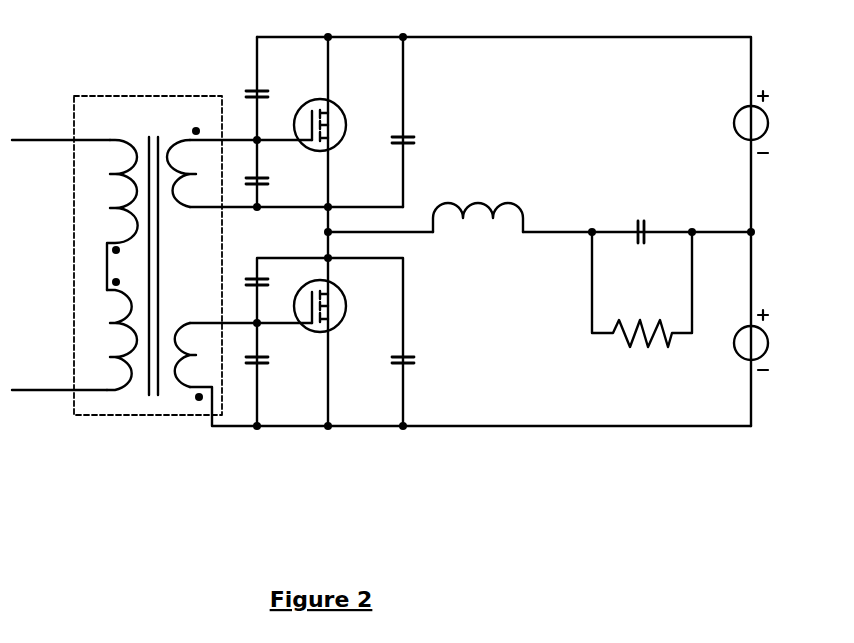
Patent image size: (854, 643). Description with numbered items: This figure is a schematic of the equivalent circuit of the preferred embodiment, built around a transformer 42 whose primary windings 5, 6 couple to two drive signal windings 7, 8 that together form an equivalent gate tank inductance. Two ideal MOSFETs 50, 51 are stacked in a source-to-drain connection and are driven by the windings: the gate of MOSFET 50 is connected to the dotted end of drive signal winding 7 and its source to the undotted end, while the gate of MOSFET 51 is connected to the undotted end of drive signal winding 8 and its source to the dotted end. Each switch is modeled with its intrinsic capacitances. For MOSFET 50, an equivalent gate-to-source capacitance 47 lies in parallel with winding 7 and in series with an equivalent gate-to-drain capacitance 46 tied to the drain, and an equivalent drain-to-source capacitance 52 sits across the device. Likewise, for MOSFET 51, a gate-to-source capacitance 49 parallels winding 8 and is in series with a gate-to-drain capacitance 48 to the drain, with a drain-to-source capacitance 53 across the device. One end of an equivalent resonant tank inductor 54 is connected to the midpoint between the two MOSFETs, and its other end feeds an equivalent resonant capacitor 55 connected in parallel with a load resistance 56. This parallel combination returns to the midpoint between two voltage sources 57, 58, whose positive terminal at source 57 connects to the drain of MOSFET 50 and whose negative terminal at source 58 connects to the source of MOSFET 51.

The transformer 42 is at (136, 96).
The primary winding 5 is at (120, 172).
The primary winding 6 is at (112, 358).
The drive signal winding 7 is at (182, 201).
The drive signal winding 8 is at (188, 323).
The equivalent gate-to-drain capacitance 46 is at (268, 95).
The equivalent gate-to-source capacitance 47 is at (268, 180).
The equivalent gate-to-drain capacitance 48 is at (268, 282).
The equivalent gate-to-source capacitance 49 is at (268, 361).
The MOSFET 50 is at (344, 112).
The MOSFET 51 is at (344, 294).
The equivalent drain-to-source capacitance 52 is at (414, 140).
The equivalent drain-to-source capacitance 53 is at (414, 360).
The equivalent resonant tank inductor 54 is at (490, 205).
The equivalent resonant capacitor 55 is at (646, 226).
The load resistance 56 is at (614, 340).
The voltage source 57 is at (766, 118).
The voltage source 58 is at (766, 337).